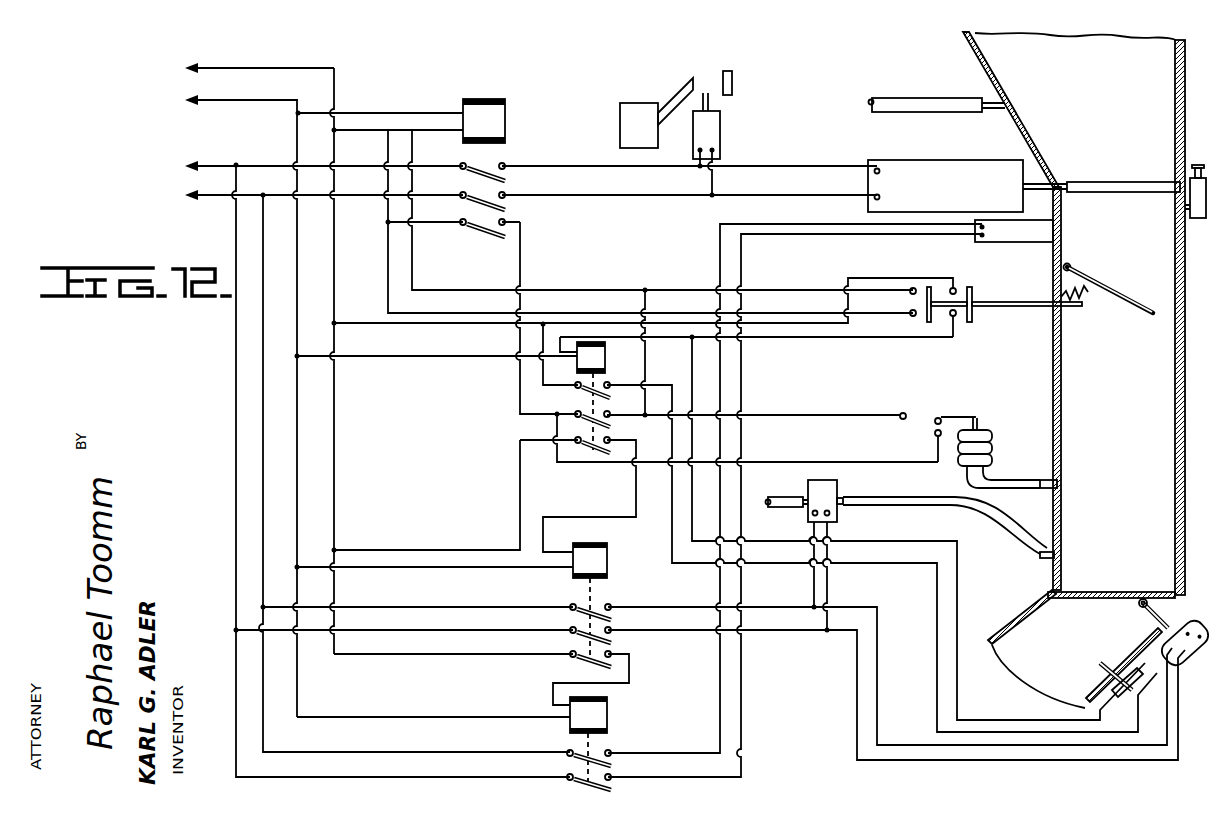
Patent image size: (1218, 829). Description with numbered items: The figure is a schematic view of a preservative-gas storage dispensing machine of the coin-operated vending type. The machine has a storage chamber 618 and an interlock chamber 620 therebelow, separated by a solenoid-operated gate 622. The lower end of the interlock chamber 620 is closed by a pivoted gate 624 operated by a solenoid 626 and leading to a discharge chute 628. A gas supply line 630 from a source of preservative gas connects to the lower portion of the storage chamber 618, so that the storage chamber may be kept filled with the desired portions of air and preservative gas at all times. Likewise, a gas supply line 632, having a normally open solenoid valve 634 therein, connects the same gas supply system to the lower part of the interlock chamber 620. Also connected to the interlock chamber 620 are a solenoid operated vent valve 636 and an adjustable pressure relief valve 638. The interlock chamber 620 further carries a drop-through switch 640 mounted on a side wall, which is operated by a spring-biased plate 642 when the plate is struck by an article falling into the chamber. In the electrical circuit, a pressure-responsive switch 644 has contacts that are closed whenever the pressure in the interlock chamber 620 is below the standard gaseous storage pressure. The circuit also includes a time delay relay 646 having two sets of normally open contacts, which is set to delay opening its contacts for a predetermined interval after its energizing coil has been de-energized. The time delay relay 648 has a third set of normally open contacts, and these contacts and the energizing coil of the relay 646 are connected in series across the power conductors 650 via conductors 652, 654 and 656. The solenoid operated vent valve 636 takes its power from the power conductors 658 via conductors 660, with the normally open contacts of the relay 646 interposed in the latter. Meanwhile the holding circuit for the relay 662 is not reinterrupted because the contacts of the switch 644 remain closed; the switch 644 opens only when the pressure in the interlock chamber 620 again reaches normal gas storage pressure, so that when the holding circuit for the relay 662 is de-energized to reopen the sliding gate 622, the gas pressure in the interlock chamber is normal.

The storage chamber 618 is at (1003, 52).
The interlock chamber 620 is at (1052, 370).
The solenoid-operated gate 622 is at (1067, 192).
The pivoted gate 624 is at (1102, 590).
The solenoid 626 is at (1163, 643).
The discharge chute 628 is at (1030, 630).
The gas supply line 630 is at (907, 112).
The gas supply line 632 is at (885, 510).
The normally open solenoid valve 634 is at (837, 485).
The solenoid operated vent valve 636 is at (1008, 242).
The adjustable pressure relief valve 638 is at (1190, 182).
The drop-through switch 640 is at (927, 275).
The spring-biased plate 642 is at (1107, 283).
The pressure-responsive switch 644 is at (952, 413).
The time delay relay 646 is at (607, 713).
The time delay relay 648 is at (608, 563).
The power conductors 650 is at (183, 100).
The conductor 652 is at (462, 657).
The conductor 654 is at (630, 672).
The conductor 656 is at (392, 702).
The power conductors 658 is at (183, 195).
The conductors 660 is at (719, 722).
The relay 662 is at (505, 118).